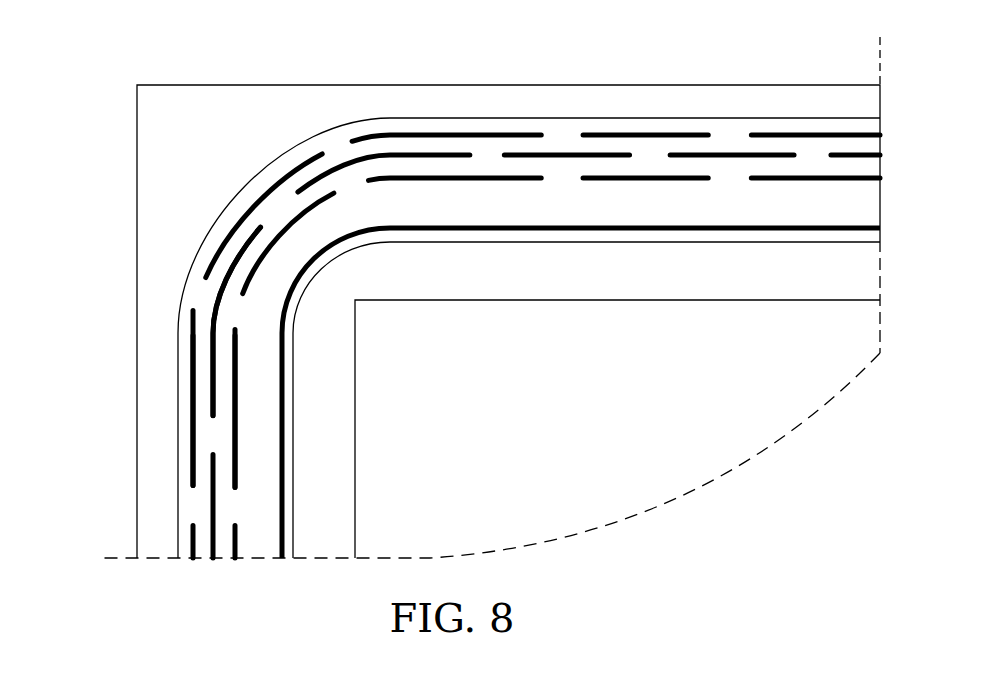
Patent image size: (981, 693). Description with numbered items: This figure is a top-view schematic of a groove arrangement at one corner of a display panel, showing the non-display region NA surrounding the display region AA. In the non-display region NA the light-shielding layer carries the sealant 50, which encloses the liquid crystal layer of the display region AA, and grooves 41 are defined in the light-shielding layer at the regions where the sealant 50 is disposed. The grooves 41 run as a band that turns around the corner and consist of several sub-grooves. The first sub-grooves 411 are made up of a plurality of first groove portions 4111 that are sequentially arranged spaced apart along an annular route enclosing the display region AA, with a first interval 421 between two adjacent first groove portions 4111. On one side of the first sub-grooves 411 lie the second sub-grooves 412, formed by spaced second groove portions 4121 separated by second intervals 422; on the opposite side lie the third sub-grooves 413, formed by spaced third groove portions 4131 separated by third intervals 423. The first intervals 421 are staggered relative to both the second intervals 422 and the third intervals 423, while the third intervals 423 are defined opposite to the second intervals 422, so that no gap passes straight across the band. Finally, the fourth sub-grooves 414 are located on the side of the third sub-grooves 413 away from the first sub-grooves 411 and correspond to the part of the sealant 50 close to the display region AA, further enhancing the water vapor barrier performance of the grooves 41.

The grooves 41 is at (536, 285).
The first sub-grooves 411 is at (527, 155).
The second sub-grooves 412 is at (473, 135).
The third sub-grooves 413 is at (412, 178).
The fourth sub-grooves 414 is at (580, 43).
The first groove portions 4111 is at (240, 252).
The second groove portions 4121 is at (197, 325).
The third groove portions 4131 is at (237, 385).
The first interval 421 is at (220, 437).
The second interval 422 is at (200, 502).
The third interval 423 is at (243, 513).
The sealant 50 is at (623, 118).
The display region AA is at (688, 300).
The non-display region NA is at (825, 84).